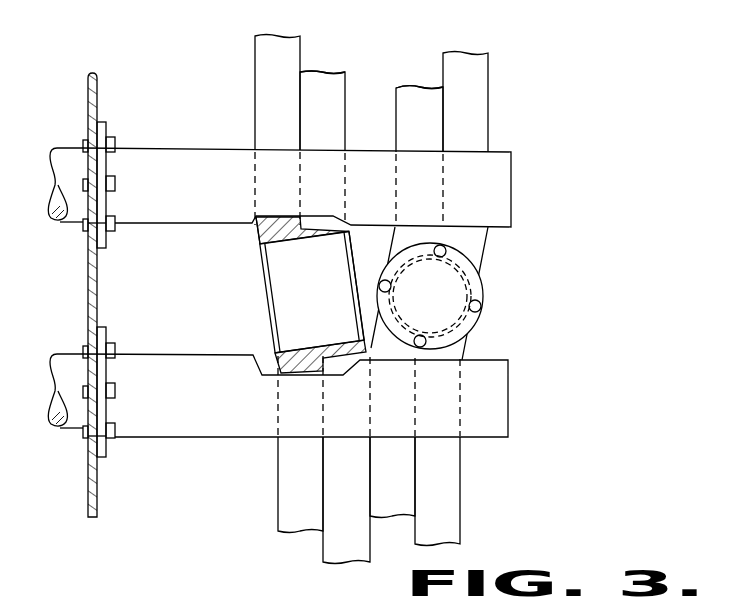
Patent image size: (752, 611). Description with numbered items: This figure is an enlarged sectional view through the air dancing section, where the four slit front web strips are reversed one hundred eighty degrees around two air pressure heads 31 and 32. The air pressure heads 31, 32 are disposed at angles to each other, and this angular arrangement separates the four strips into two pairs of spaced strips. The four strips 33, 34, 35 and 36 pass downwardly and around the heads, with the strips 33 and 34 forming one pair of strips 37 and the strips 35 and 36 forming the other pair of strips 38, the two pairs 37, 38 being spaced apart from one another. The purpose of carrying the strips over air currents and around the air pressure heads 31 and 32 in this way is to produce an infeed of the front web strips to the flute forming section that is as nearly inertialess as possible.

The air pressure head 31 is at (280, 286).
The air pressure head 32 is at (448, 292).
The strip 33 is at (262, 93).
The strip 34 is at (338, 97).
The strip 35 is at (405, 118).
The strip 36 is at (473, 96).
The pair of strips 37 is at (320, 57).
The pair of strips 38 is at (436, 68).